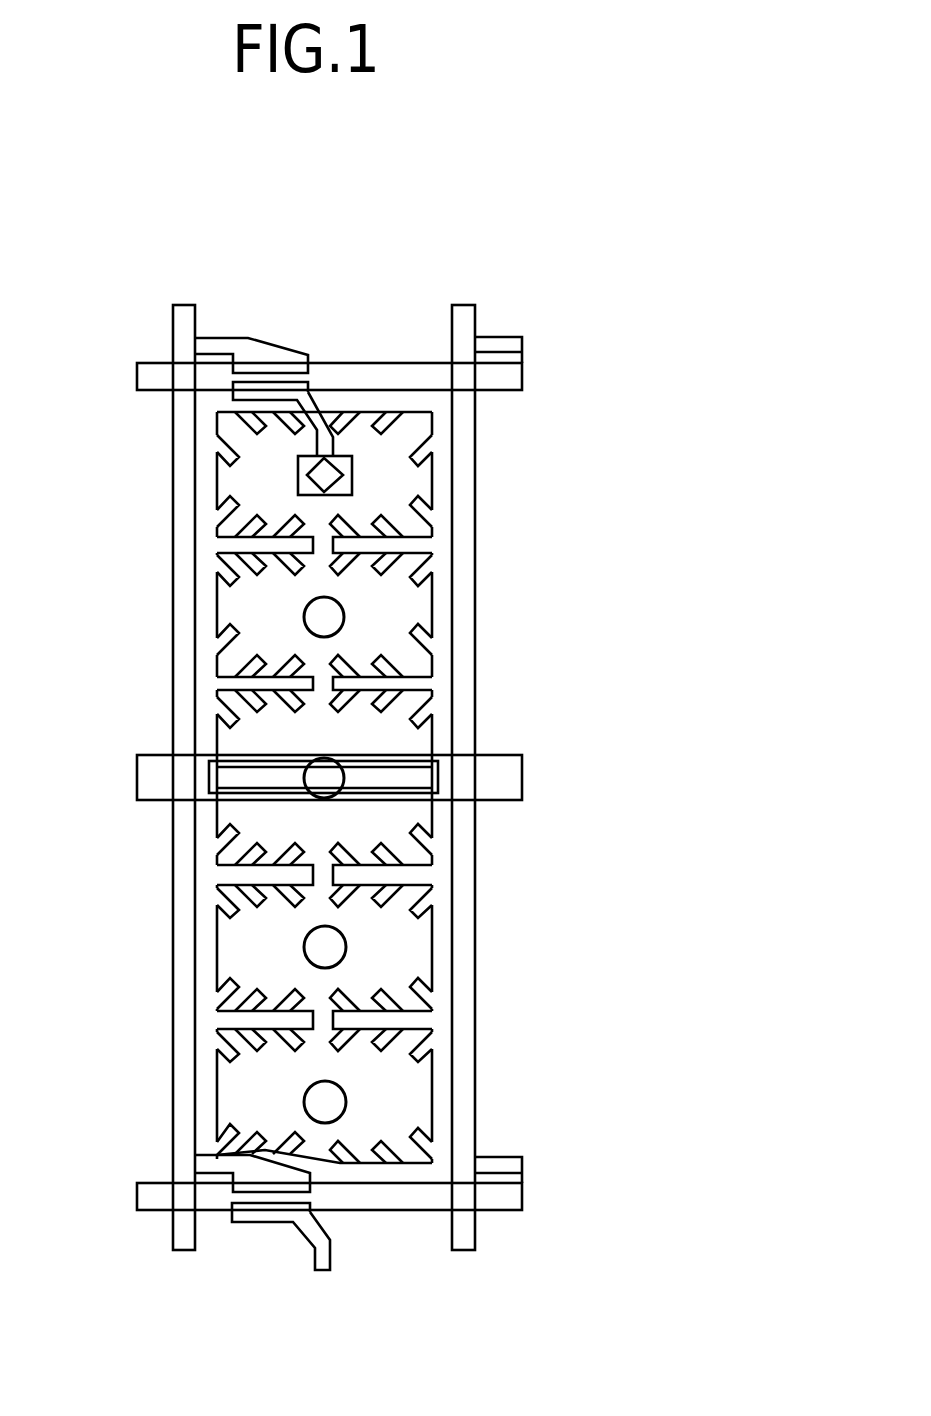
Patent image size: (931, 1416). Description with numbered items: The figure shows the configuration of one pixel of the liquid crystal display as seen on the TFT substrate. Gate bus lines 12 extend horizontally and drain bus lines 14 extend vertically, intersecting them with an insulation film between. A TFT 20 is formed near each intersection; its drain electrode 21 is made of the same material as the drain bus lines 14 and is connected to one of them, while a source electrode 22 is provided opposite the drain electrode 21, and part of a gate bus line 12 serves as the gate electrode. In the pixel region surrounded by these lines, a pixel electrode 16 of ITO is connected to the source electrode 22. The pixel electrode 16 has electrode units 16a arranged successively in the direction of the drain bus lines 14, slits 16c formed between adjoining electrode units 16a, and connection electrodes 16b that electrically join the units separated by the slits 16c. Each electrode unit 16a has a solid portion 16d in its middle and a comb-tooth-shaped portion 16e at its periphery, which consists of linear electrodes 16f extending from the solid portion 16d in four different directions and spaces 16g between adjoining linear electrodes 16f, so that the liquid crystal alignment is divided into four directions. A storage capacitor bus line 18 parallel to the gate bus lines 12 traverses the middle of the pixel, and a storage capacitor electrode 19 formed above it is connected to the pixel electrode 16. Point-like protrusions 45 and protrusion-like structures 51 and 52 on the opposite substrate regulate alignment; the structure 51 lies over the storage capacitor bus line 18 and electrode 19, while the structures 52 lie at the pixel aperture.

The gate bus line 12 is at (137, 378).
The drain bus line 14 is at (184, 308).
The pixel electrode 16 is at (533, 787).
The electrode unit 16a is at (493, 787).
The connection electrode 16b is at (327, 548).
The slit 16c is at (425, 686).
The solid portion 16d is at (368, 622).
The comb-tooth-shaped portion 16e is at (443, 767).
The linear electrode 16f is at (425, 560).
The space 16g is at (418, 585).
The storage capacitor bus line 18 is at (138, 782).
The storage capacitor electrode 19 is at (209, 778).
The TFT 20 is at (293, 748).
The drain electrode 21 is at (263, 355).
The source electrode 22 is at (300, 398).
The point-like protrusion 45 is at (318, 481).
The protrusion-like structure 51 is at (333, 778).
The protrusion-like structure 52 is at (303, 620).